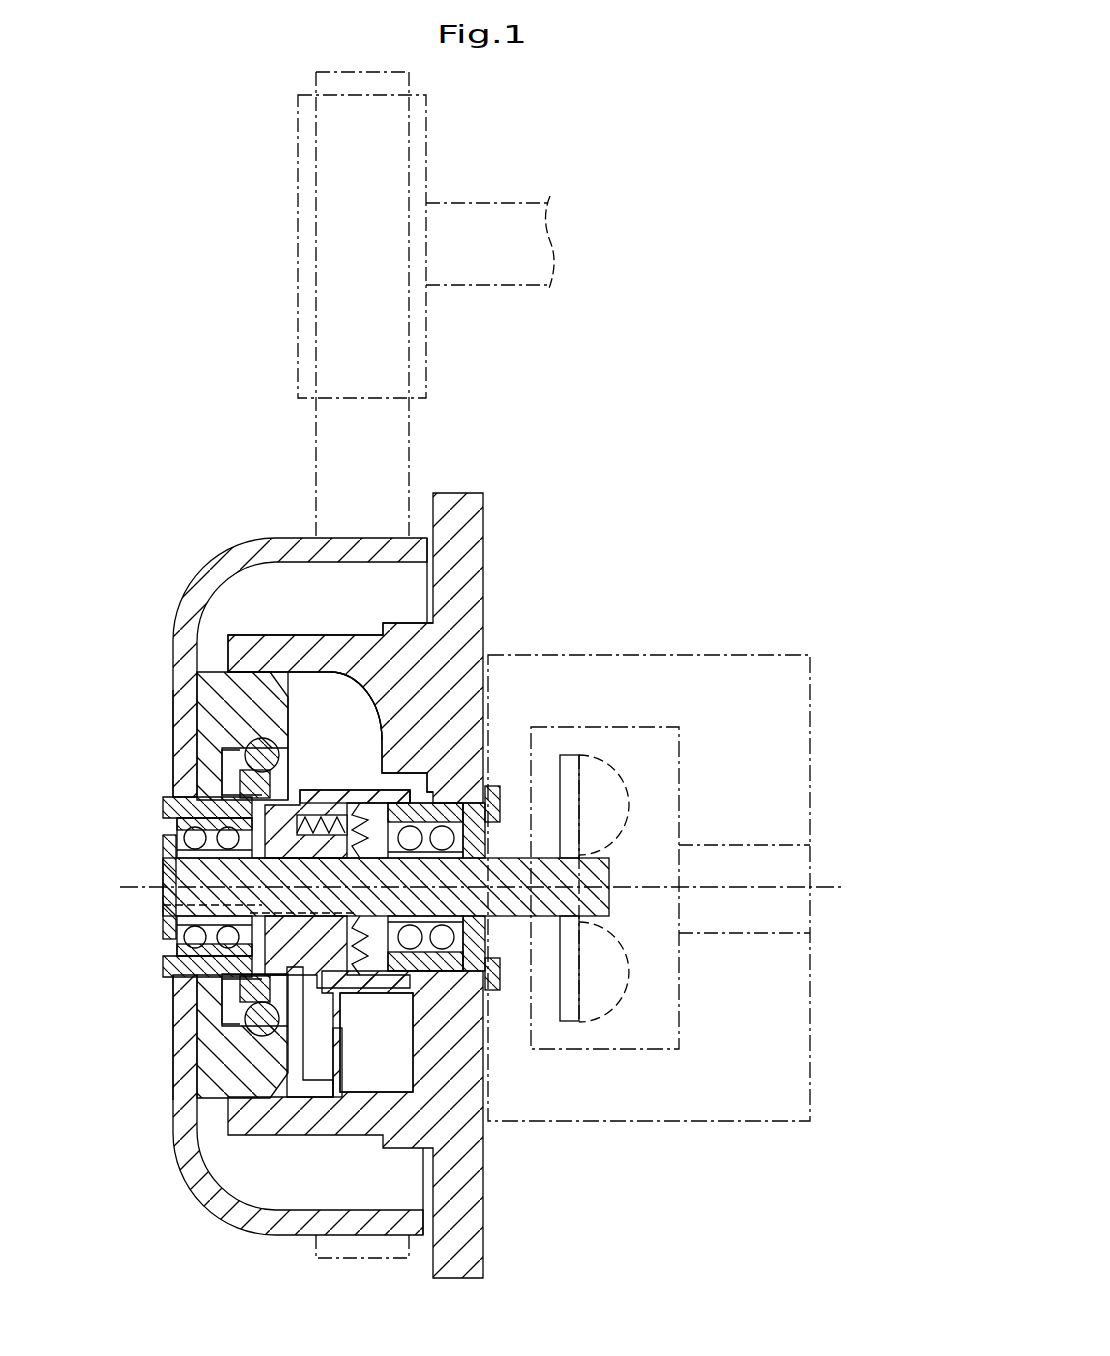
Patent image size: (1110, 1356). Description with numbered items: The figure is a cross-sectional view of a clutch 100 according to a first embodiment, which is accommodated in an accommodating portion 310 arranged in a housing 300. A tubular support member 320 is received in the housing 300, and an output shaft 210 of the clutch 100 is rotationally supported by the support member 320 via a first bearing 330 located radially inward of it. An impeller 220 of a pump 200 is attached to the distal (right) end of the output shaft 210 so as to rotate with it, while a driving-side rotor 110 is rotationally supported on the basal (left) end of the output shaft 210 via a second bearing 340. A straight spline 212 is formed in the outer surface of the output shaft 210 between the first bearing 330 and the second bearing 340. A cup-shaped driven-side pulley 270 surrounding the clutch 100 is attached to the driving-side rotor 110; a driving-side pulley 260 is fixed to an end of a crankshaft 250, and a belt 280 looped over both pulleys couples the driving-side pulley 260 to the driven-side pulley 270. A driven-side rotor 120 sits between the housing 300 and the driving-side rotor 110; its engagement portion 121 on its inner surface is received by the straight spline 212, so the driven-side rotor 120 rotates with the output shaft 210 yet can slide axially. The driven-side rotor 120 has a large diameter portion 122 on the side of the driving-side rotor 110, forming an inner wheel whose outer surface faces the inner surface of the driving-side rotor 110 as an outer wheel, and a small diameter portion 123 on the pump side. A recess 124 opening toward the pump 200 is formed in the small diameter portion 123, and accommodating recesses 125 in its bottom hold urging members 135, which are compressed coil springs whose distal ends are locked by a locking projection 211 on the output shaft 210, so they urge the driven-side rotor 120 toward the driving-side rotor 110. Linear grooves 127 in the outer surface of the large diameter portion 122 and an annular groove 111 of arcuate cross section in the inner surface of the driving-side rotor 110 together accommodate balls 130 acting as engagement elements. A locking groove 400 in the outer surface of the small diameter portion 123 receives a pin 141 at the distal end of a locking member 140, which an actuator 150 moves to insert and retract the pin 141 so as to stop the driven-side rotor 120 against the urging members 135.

The clutch 100 is at (136, 727).
The driving-side rotor 110 is at (166, 806).
The annular groove 111 is at (198, 1044).
The driven-side rotor 120 is at (446, 754).
The engagement portion 121 is at (260, 860).
The large diameter portion 122 is at (200, 792).
The small diameter portion 123 is at (346, 790).
The recess 124 is at (384, 690).
The accommodating recesses 125 is at (330, 802).
The linear grooves 127 is at (220, 1003).
The balls 130 is at (197, 975).
The urging members 135 is at (365, 889).
The locking member 140 is at (336, 1030).
The pin 141 is at (337, 952).
The actuator 150 is at (452, 1082).
The pump 200 is at (759, 622).
The output shaft 210 is at (609, 868).
The locking projection 211 is at (352, 872).
The straight spline 212 is at (166, 910).
The impeller 220 is at (626, 978).
The crankshaft 250 is at (459, 197).
The driving-side pulley 260 is at (298, 346).
The driven-side pulley 270 is at (252, 538).
The belt 280 is at (316, 415).
The housing 300 is at (483, 500).
The accommodating portion 310 is at (334, 688).
The support member 320 is at (494, 990).
The first bearing 330 is at (470, 900).
The second bearing 340 is at (166, 863).
The locking groove 400 is at (296, 800).